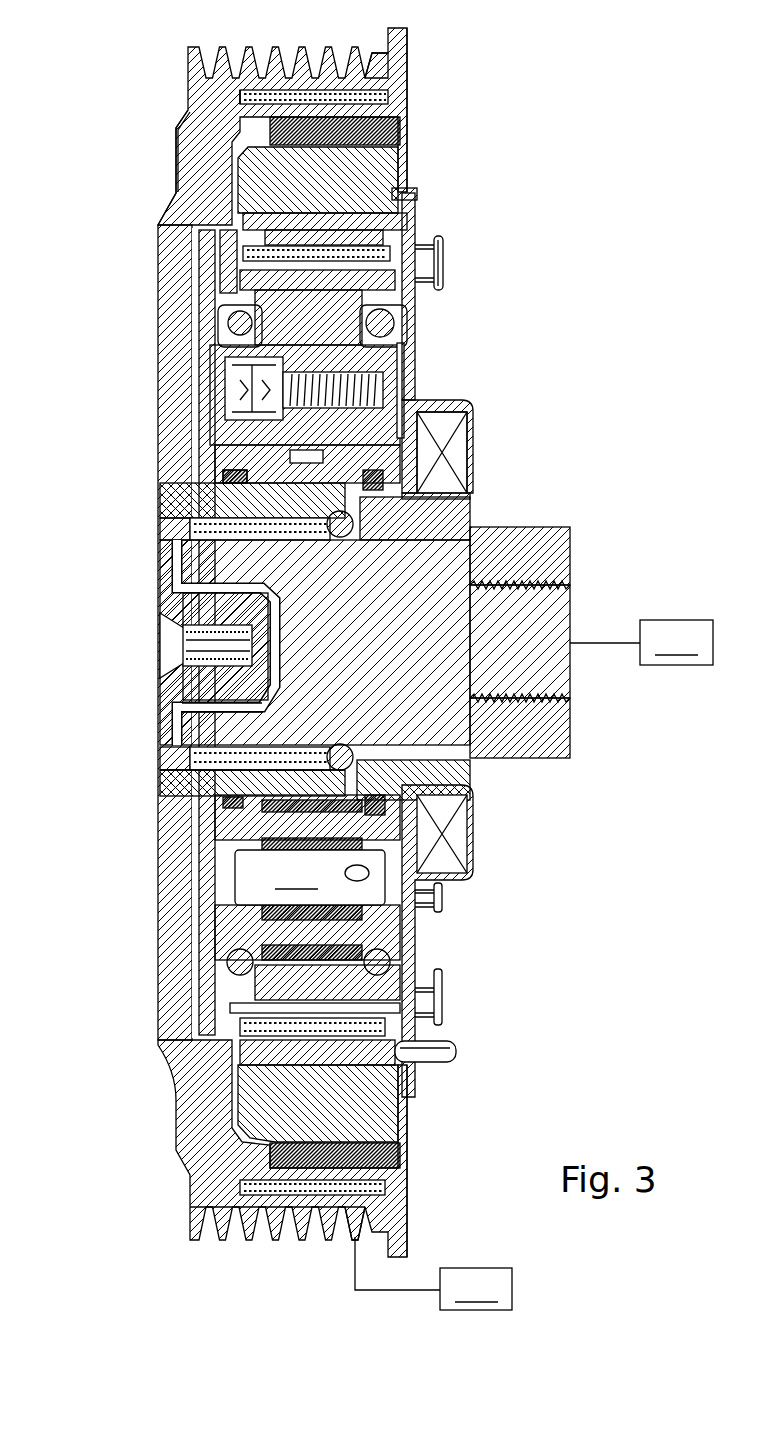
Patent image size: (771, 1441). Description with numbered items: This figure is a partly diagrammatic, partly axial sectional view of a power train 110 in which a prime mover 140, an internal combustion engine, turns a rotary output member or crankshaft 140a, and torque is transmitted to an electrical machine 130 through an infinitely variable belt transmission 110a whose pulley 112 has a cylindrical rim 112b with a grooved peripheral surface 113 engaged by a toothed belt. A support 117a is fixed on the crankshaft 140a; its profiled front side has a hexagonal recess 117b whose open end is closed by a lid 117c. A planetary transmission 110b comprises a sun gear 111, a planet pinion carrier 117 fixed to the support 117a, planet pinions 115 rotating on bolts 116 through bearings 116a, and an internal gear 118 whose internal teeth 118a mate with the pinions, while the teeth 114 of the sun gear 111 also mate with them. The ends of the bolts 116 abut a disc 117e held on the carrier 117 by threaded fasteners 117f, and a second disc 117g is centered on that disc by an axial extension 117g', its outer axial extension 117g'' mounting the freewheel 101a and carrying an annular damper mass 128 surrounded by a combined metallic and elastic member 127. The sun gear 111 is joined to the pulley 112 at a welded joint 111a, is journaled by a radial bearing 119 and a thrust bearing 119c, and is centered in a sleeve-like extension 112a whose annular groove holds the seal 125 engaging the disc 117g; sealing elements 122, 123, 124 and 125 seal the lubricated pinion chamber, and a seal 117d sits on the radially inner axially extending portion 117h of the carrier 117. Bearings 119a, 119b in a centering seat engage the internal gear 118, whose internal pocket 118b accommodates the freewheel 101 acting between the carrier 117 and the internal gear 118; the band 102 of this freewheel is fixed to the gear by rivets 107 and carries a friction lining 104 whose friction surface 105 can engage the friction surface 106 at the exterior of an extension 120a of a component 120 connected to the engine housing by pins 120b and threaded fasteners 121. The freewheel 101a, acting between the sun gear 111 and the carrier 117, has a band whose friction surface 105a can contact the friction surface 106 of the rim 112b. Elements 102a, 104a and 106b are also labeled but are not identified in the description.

The freewheel 101 is at (238, 243).
The freewheel 101a is at (243, 98).
The band 102 is at (232, 212).
The pulley flange step 102a is at (362, 75).
The friction lining 104 is at (428, 244).
The upper bearing 104a is at (395, 92).
The friction surface 105 is at (428, 280).
The friction surface 105a is at (327, 1205).
The friction surface 106 is at (245, 256).
The lower bearing 106b is at (385, 1193).
The rivets 107 is at (417, 198).
The power train 110 is at (585, 108).
The infinitely variable belt transmission 110a is at (168, 128).
The planetary transmission 110b is at (152, 312).
The sun gear 111 is at (162, 762).
The welded joint 111a is at (172, 792).
The pulley 112 is at (180, 973).
The sleeve-like extension 112a is at (172, 494).
The cylindrical rim 112b is at (247, 1237).
The grooved peripheral surface 113 is at (286, 1243).
The teeth 114 is at (465, 781).
The planet pinions 115 is at (245, 813).
The shaft 116 is at (310, 877).
The bearing 116a is at (473, 858).
The planet pinion carrier 117 is at (500, 726).
The support 117a is at (558, 681).
The hexagonal recess 117b is at (168, 627).
The lid 117c is at (165, 712).
The seal 117d is at (458, 453).
The disc 117e is at (237, 413).
The threaded fasteners 117f is at (372, 395).
The second disc 117g is at (244, 1103).
The axial extension 117g' is at (215, 450).
The axial extension 117g'' is at (239, 52).
The radially inner axially extending portion 117h is at (455, 521).
The internal gear 118 is at (410, 986).
The internal teeth 118a is at (398, 348).
The internal pocket 118b is at (236, 1026).
The radial bearing 119 is at (190, 530).
The bearing 119a is at (386, 320).
The bearing 119b is at (240, 325).
The thrust bearing 119c is at (382, 512).
The component 120 is at (417, 216).
The extension 120a is at (245, 268).
The pins 120b is at (452, 1050).
The threaded fasteners 121 is at (445, 262).
The sealing element 122 is at (240, 892).
The sealing element 123 is at (430, 818).
The sealing element 124 is at (410, 920).
The seal 125 is at (240, 805).
The combined metallic and elastic member 127 is at (405, 136).
The annular damper mass 128 is at (385, 1127).
The electrical machine 130 is at (433, 1273).
The prime mover 140 is at (641, 642).
The rotary output member 140a is at (550, 748).